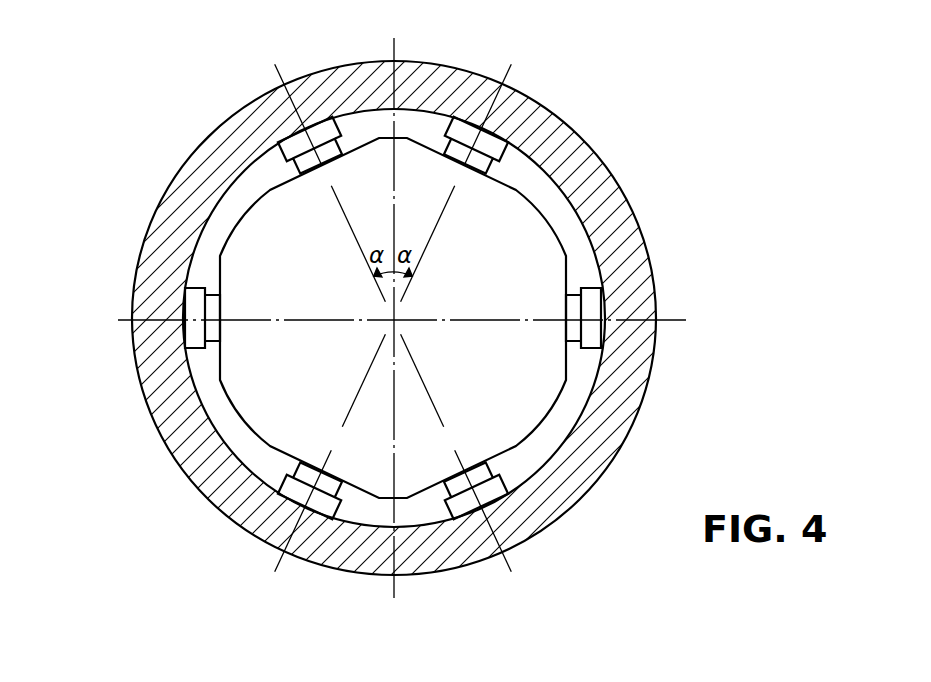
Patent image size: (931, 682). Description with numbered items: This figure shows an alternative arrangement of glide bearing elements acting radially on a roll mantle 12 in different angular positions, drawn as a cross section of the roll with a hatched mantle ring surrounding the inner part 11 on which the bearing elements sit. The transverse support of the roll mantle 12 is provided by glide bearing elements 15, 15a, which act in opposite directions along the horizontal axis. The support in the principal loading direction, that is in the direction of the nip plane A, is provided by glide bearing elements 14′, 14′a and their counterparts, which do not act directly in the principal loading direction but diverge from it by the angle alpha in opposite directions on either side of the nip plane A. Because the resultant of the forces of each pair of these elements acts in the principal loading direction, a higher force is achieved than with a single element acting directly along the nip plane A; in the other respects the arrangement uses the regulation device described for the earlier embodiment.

The inner part (holder/sleeve) 11 is at (540, 226).
The roll mantle 12 is at (181, 218).
The glide bearing element 14′ is at (308, 133).
The glide bearing element 14′a is at (499, 496).
The glide bearing element 15 is at (597, 326).
The glide bearing element 15a is at (194, 324).
The nip plane A is at (394, 52).